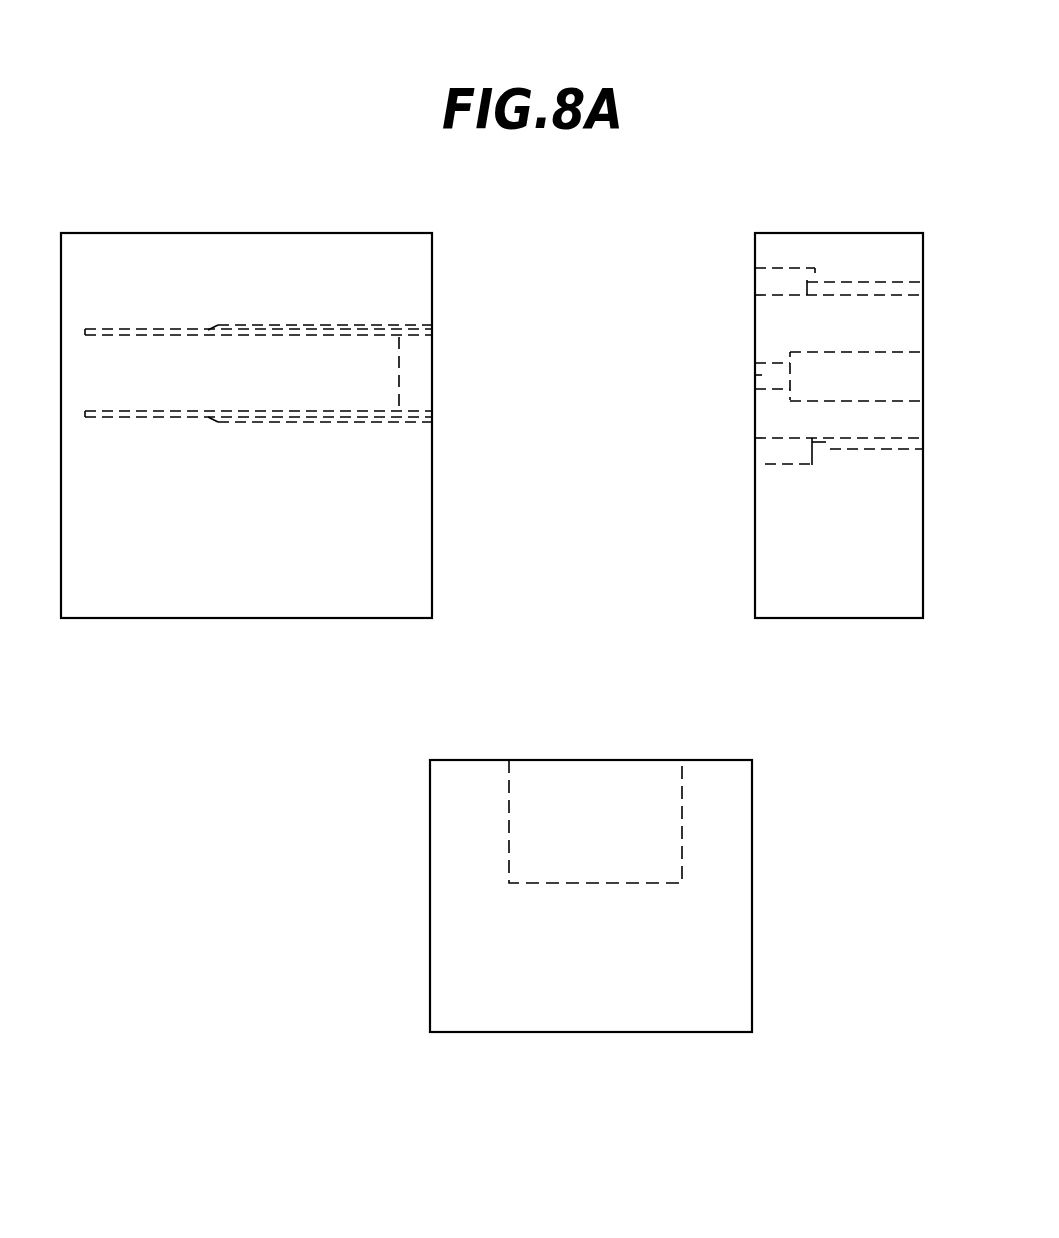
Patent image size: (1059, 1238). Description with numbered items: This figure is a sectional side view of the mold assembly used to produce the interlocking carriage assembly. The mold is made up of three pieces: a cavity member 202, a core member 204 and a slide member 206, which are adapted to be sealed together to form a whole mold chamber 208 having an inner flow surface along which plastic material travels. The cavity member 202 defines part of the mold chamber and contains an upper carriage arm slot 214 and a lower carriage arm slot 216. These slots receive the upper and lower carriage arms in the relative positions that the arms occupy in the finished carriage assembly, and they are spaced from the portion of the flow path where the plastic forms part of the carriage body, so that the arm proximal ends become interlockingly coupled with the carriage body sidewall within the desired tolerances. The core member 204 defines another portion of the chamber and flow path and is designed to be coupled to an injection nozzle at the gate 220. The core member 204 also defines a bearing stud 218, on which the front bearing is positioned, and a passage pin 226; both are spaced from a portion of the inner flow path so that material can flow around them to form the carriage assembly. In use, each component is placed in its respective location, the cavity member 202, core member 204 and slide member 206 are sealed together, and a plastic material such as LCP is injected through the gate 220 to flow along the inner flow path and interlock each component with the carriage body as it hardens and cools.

The cavity member 202 is at (432, 566).
The core member 204 is at (750, 568).
The slide member 206 is at (430, 890).
The whole mold chamber 208 is at (590, 777).
The upper carriage arm slot 214 is at (424, 327).
The lower carriage arm slot 216 is at (418, 415).
The bearing stud 218 is at (759, 374).
The gate 220 is at (858, 287).
The passage pin 226 is at (815, 385).